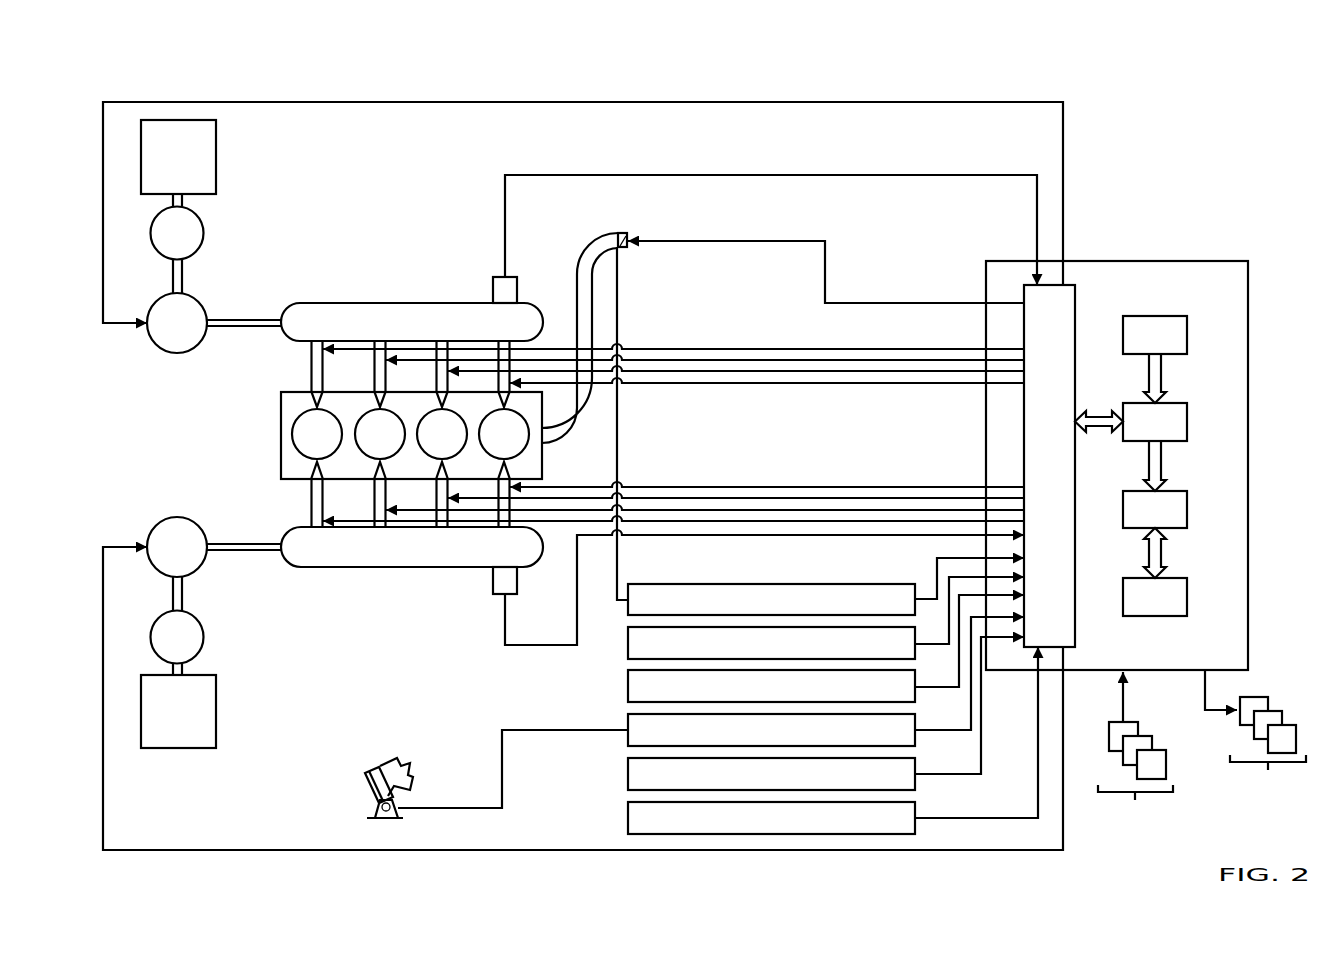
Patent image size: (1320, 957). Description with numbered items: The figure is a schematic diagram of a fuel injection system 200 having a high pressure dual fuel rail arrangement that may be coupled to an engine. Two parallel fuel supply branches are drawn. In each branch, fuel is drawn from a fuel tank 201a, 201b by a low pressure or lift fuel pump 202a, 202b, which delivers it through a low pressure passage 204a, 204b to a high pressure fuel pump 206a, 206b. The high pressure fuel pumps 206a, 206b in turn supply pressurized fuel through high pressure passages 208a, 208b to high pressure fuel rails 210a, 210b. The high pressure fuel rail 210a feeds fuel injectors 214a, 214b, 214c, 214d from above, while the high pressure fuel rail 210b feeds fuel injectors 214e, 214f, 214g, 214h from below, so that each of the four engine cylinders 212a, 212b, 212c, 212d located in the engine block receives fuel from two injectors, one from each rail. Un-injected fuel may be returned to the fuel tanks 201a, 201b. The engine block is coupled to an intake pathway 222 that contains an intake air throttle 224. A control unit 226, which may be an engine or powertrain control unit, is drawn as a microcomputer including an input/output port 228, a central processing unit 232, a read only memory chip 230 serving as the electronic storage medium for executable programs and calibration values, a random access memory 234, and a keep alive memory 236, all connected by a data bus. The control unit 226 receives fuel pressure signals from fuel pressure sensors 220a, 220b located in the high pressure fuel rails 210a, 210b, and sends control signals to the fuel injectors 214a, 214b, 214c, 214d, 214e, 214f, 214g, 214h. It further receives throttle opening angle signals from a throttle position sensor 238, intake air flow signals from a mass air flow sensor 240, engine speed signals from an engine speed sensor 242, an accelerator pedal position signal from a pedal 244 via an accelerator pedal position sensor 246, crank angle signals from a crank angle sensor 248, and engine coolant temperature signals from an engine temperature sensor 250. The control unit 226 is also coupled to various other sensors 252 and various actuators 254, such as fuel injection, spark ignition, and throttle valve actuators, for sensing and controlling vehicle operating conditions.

The fuel injection system 200 is at (1152, 145).
The fuel tank 201a is at (196, 166).
The fuel tank 201b is at (196, 720).
The low pressure fuel pump 202a is at (159, 242).
The low pressure fuel pump 202b is at (159, 646).
The low pressure passage 204a is at (184, 282).
The low pressure passage 204b is at (184, 590).
The high pressure fuel pump 206a is at (158, 332).
The high pressure fuel pump 206b is at (158, 556).
The high pressure passage 208a is at (236, 319).
The high pressure passage 208b is at (234, 553).
The high pressure fuel rail 210a is at (412, 322).
The high pressure fuel rail 210b is at (412, 547).
The engine cylinder 212a is at (299, 443).
The engine cylinder 212b is at (362, 443).
The engine cylinder 212c is at (424, 443).
The engine cylinder 212d is at (486, 443).
The fuel injector 214a is at (311, 352).
The fuel injector 214b is at (380, 340).
The fuel injector 214c is at (443, 340).
The fuel injector 214d is at (510, 340).
The fuel injector 214e is at (312, 516).
The fuel injector 214f is at (378, 530).
The fuel injector 214g is at (440, 530).
The fuel injector 214h is at (510, 532).
The fuel pressure sensor 220a is at (493, 290).
The fuel pressure sensor 220b is at (492, 585).
The intake pathway 222 is at (578, 260).
The intake air throttle 224 is at (683, 241).
The control unit 226 is at (1249, 472).
The input/output port 228 is at (1076, 326).
The read only memory chip 230 is at (1188, 333).
The central processing unit 232 is at (1188, 420).
The random access memory 234 is at (1188, 508).
The keep alive memory 236 is at (1188, 596).
The throttle position sensor 238 is at (773, 584).
The mass air flow sensor 240 is at (627, 640).
The engine speed sensor 242 is at (627, 684).
The pedal 244 is at (368, 786).
The accelerator pedal position sensor 246 is at (627, 727).
The crank angle sensor 248 is at (627, 770).
The engine temperature sensor 250 is at (627, 816).
The sensors 252 is at (1134, 756).
The actuators 254 is at (1262, 741).